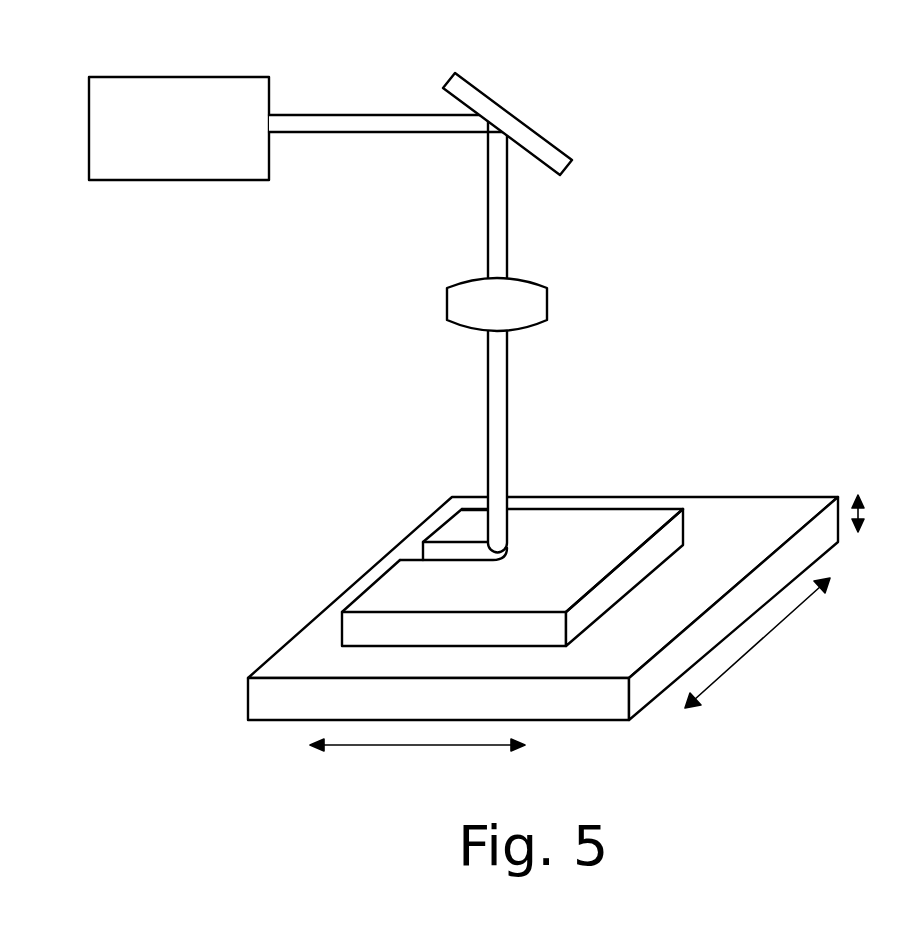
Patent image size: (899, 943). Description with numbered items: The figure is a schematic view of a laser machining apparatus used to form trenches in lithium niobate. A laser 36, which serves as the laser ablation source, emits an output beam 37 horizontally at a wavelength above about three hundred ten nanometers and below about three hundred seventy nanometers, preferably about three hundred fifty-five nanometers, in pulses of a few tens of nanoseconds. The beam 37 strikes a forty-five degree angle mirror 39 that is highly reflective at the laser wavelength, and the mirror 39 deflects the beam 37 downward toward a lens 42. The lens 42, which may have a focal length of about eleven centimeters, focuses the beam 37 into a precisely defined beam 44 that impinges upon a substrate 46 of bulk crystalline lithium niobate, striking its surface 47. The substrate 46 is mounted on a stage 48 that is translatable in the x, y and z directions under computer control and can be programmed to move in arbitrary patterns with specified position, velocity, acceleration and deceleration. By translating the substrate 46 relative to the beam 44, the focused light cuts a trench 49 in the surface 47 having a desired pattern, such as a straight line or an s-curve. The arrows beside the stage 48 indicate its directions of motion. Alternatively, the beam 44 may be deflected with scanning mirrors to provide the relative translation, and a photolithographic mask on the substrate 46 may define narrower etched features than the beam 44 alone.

The laser 36 is at (168, 180).
The output beam 37 is at (328, 113).
The 45° angle mirror 39 is at (480, 88).
The lens 42 is at (545, 307).
The precisely defined beam 44 is at (488, 402).
The substrate 46 is at (625, 507).
The surface 47 is at (570, 518).
The stage 48 is at (647, 698).
The trench 49 is at (425, 550).